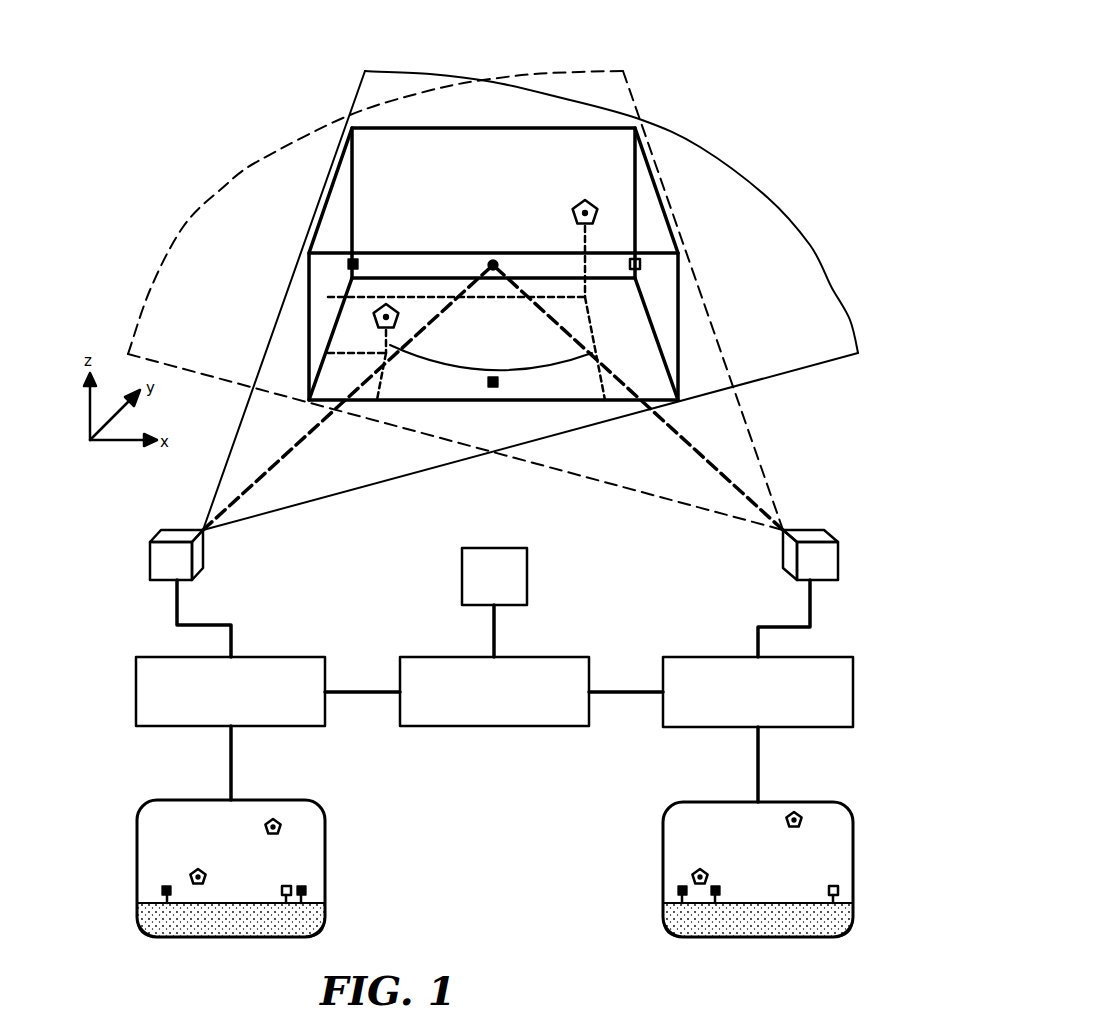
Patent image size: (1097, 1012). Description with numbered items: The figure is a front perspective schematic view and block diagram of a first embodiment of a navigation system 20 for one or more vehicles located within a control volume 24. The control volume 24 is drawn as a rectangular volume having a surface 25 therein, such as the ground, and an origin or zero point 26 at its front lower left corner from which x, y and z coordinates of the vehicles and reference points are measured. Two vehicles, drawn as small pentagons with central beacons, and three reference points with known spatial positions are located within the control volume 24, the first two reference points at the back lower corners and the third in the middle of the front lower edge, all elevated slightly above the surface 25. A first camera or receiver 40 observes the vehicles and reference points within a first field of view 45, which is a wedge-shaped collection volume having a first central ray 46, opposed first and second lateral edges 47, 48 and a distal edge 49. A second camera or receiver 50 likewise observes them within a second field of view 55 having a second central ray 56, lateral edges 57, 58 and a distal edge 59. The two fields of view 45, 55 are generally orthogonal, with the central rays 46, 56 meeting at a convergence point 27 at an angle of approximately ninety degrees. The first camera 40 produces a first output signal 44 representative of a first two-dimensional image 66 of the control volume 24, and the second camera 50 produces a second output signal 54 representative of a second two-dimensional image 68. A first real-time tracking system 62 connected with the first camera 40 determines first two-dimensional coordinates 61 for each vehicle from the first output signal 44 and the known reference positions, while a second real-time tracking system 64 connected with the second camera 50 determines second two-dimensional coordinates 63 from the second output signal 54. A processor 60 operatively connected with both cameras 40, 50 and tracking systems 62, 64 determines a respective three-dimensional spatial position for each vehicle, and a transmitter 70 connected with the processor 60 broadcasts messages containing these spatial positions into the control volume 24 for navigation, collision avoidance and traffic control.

The navigation system 20 is at (160, 112).
The control volume 24 is at (400, 167).
The surface 25 is at (570, 383).
The origin or zero point 26 is at (310, 400).
The convergence point 27 is at (493, 260).
The first camera or receiver 40 is at (150, 560).
The first output signal 44 is at (177, 612).
The first field of view 45 is at (510, 310).
The first central ray or path 46 is at (267, 477).
The first lateral edge of first field of view 47 is at (264, 358).
The second lateral edge of first field of view 48 is at (355, 490).
The distal edge of first field of view 49 is at (706, 150).
The second camera or receiver 50 is at (838, 562).
The second output signal 54 is at (810, 612).
The second field of view 55 is at (479, 310).
The second central ray or path 56 is at (723, 478).
The first lateral edge of second field of view 57 is at (728, 356).
The second lateral edge of second field of view 58 is at (640, 493).
The distal edge of second field of view 59 is at (258, 163).
The processor 60 is at (506, 702).
The first two-dimensional coordinates 61 is at (360, 690).
The first real-time tracking system 62 is at (244, 702).
The second two-dimensional coordinates 63 is at (622, 690).
The second real-time tracking system 64 is at (768, 702).
The first two-dimensional image 66 is at (325, 875).
The second two-dimensional image 68 is at (853, 855).
The transmitter 70 is at (508, 587).